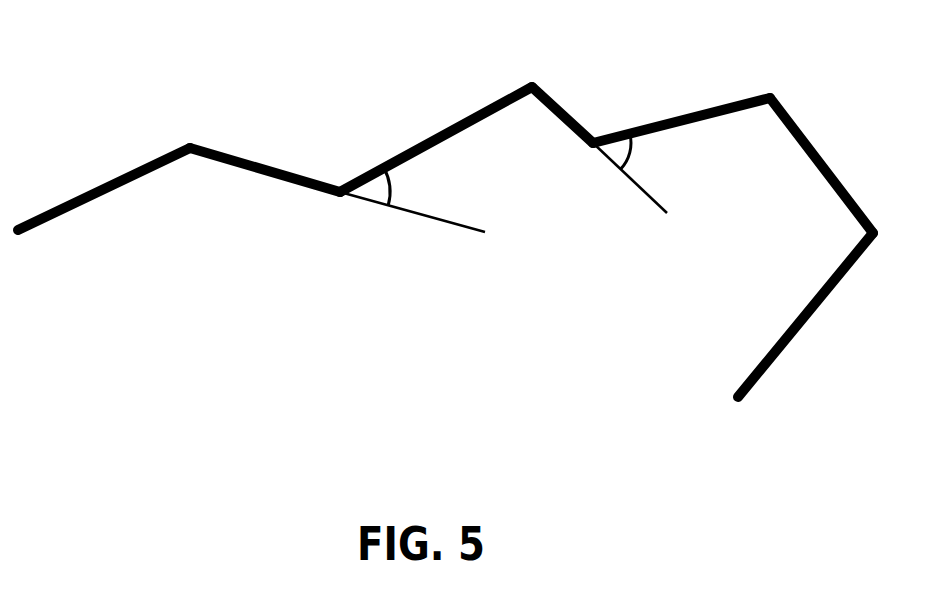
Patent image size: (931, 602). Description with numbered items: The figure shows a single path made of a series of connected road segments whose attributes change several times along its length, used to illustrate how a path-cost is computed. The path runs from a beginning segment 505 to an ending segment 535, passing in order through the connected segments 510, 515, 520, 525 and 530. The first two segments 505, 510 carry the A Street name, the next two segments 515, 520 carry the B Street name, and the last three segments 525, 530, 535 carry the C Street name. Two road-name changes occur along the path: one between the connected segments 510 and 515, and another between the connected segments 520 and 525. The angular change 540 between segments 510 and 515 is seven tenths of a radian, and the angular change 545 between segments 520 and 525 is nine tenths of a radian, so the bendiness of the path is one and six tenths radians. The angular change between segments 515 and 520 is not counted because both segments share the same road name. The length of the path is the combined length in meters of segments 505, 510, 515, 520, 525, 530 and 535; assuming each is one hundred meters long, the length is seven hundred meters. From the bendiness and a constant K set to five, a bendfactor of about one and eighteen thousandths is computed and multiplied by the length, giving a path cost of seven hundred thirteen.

The beginning segment 505 is at (121, 175).
The road segment 510 is at (231, 155).
The road segment 515 is at (453, 122).
The road segment 520 is at (549, 97).
The road segment 525 is at (717, 105).
The road segment 530 is at (807, 137).
The ending segment 535 is at (798, 333).
The angular change 540 is at (482, 191).
The angular change 545 is at (650, 173).